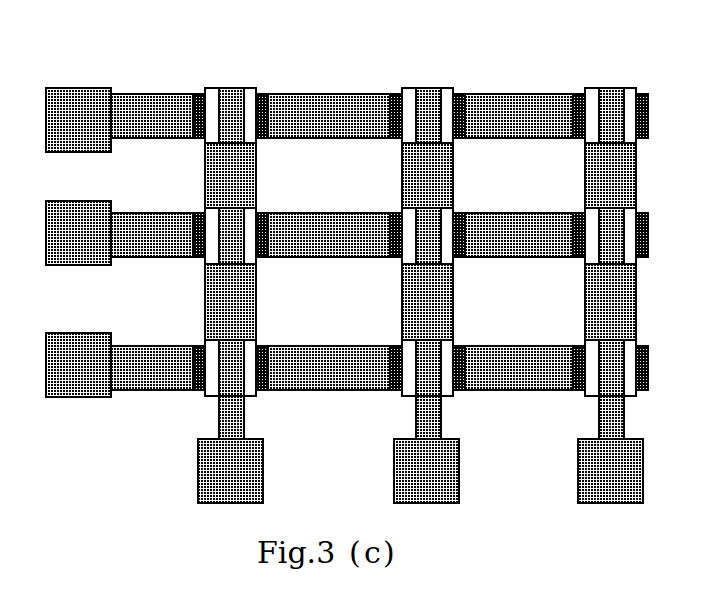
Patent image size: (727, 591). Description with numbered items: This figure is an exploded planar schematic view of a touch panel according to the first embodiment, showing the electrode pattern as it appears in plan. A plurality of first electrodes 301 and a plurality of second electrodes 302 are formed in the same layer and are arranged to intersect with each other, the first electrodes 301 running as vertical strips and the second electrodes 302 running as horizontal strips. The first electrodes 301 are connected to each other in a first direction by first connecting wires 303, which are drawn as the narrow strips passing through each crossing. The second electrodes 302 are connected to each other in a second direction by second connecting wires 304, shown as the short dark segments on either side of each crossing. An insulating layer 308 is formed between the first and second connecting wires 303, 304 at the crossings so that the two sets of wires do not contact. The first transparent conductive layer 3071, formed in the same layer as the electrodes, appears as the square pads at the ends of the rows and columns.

The first electrode 301 is at (229, 177).
The second electrode 302 is at (320, 120).
The first connecting wire 303 is at (232, 115).
The second connecting wire 304 is at (197, 97).
The insulating layer 308 is at (247, 100).
The first transparent conductive layer 3071 is at (79, 120).